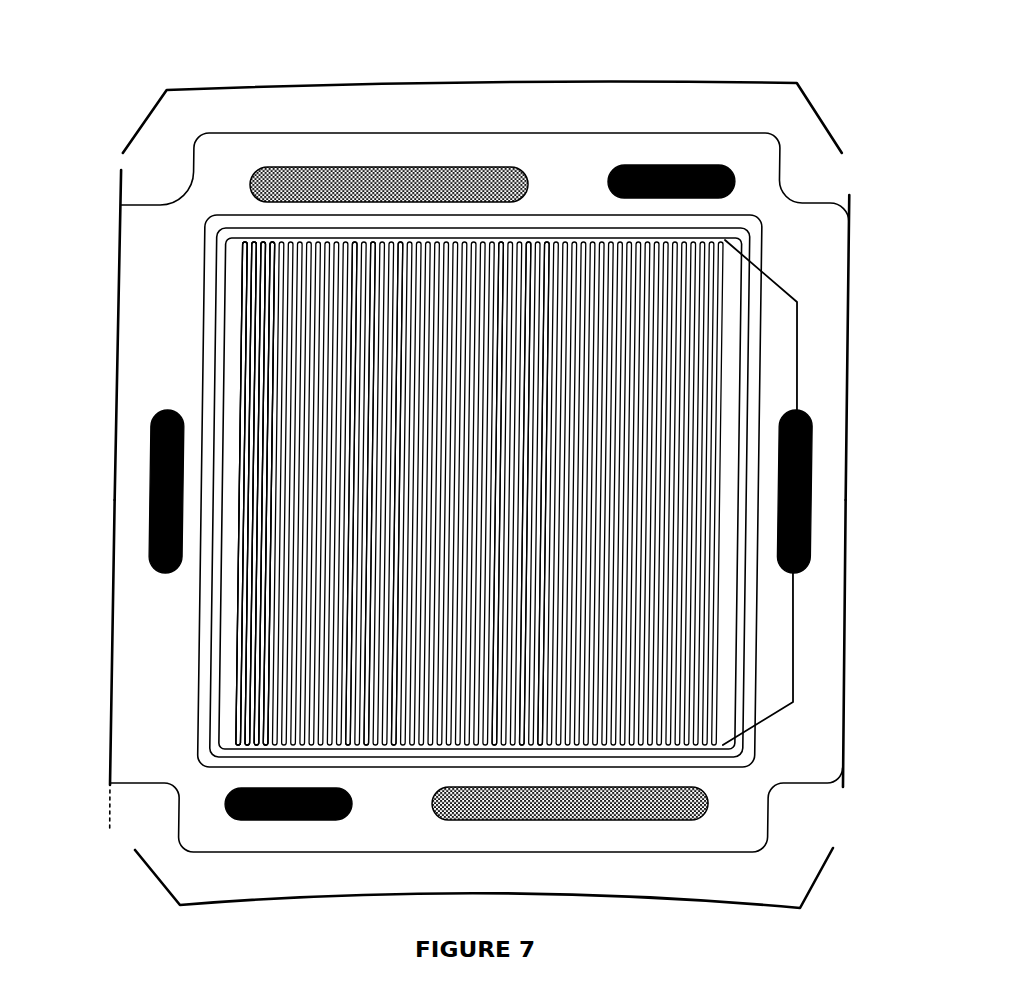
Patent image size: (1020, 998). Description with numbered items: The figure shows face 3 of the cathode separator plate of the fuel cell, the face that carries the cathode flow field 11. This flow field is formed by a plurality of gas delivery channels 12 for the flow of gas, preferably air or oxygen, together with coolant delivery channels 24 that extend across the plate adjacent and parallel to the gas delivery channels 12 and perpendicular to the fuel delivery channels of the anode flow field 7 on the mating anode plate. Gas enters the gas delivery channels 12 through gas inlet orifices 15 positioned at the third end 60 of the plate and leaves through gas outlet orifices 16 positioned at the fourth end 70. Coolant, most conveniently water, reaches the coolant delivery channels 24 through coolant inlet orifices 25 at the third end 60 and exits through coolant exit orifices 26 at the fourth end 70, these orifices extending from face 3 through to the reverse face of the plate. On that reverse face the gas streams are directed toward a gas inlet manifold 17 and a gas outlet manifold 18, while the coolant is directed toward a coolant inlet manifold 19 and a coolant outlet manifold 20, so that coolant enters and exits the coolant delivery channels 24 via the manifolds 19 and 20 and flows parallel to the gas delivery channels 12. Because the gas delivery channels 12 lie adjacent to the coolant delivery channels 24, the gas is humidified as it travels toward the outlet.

The face 3 is at (151, 562).
The anode flow field 7 is at (815, 521).
The cathode flow field 11 is at (803, 333).
The gas delivery channels 12 is at (263, 693).
The gas inlet orifices 15 is at (272, 745).
The gas outlet orifices 16 is at (273, 276).
The gas inlet manifold 17 is at (492, 821).
The gas outlet manifold 18 is at (291, 167).
The coolant inlet manifold 19 is at (268, 821).
The coolant outlet manifold 20 is at (670, 167).
The coolant delivery channels 24 is at (241, 284).
The coolant inlet orifices 25 is at (392, 745).
The coolant exit orifices 26 is at (550, 244).
The third end 60 is at (657, 905).
The fourth end 70 is at (481, 83).